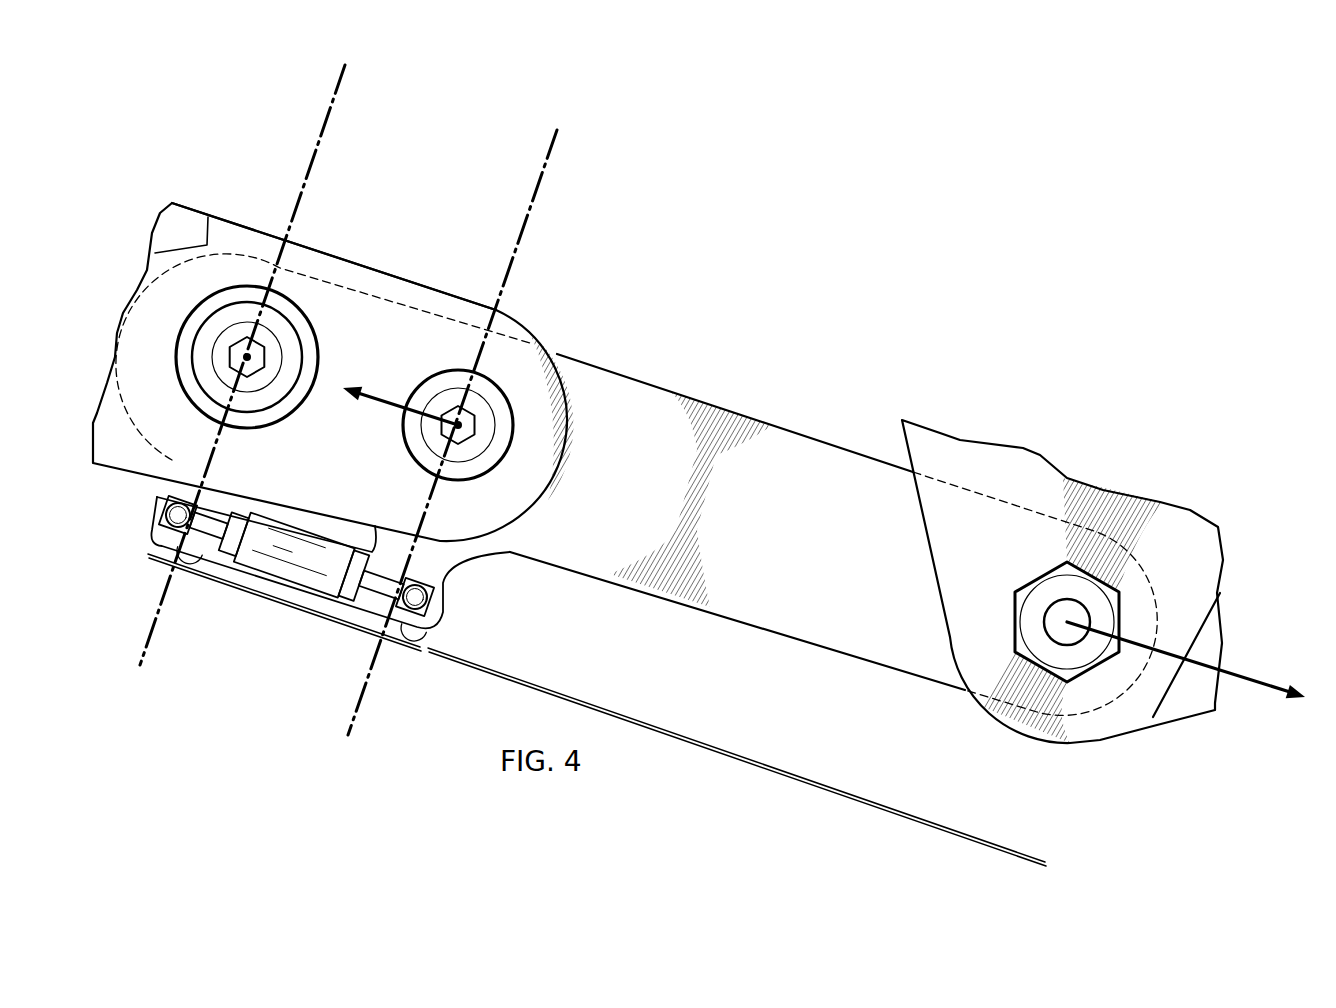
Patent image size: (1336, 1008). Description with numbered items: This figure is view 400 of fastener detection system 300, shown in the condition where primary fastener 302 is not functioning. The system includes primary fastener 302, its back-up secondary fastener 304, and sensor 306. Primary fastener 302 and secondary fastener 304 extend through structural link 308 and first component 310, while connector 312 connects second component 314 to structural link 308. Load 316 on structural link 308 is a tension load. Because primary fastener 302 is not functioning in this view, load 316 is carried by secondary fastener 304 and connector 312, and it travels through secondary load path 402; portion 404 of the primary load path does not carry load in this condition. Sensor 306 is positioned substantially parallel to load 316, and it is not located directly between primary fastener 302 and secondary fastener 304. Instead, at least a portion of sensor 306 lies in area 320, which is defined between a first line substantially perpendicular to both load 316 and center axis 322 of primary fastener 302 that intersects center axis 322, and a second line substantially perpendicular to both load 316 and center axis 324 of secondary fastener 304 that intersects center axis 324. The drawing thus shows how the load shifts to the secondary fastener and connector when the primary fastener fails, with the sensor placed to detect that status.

The view 400 is at (150, 120).
The fastener detection system 300 is at (232, 185).
The area 320 is at (427, 160).
The first component 310 is at (383, 268).
The primary fastener 302 is at (259, 420).
The center axis of primary fastener 322 is at (253, 356).
The secondary fastener 304 is at (437, 369).
The center axis of secondary fastener 324 is at (462, 434).
The load 316 is at (388, 413).
The sensor 306 is at (350, 534).
The portion of primary load path 404 is at (286, 601).
The secondary load path 402 is at (740, 757).
The structural link 308 is at (815, 436).
The connector 312 is at (1037, 571).
The second component 314 is at (1108, 748).